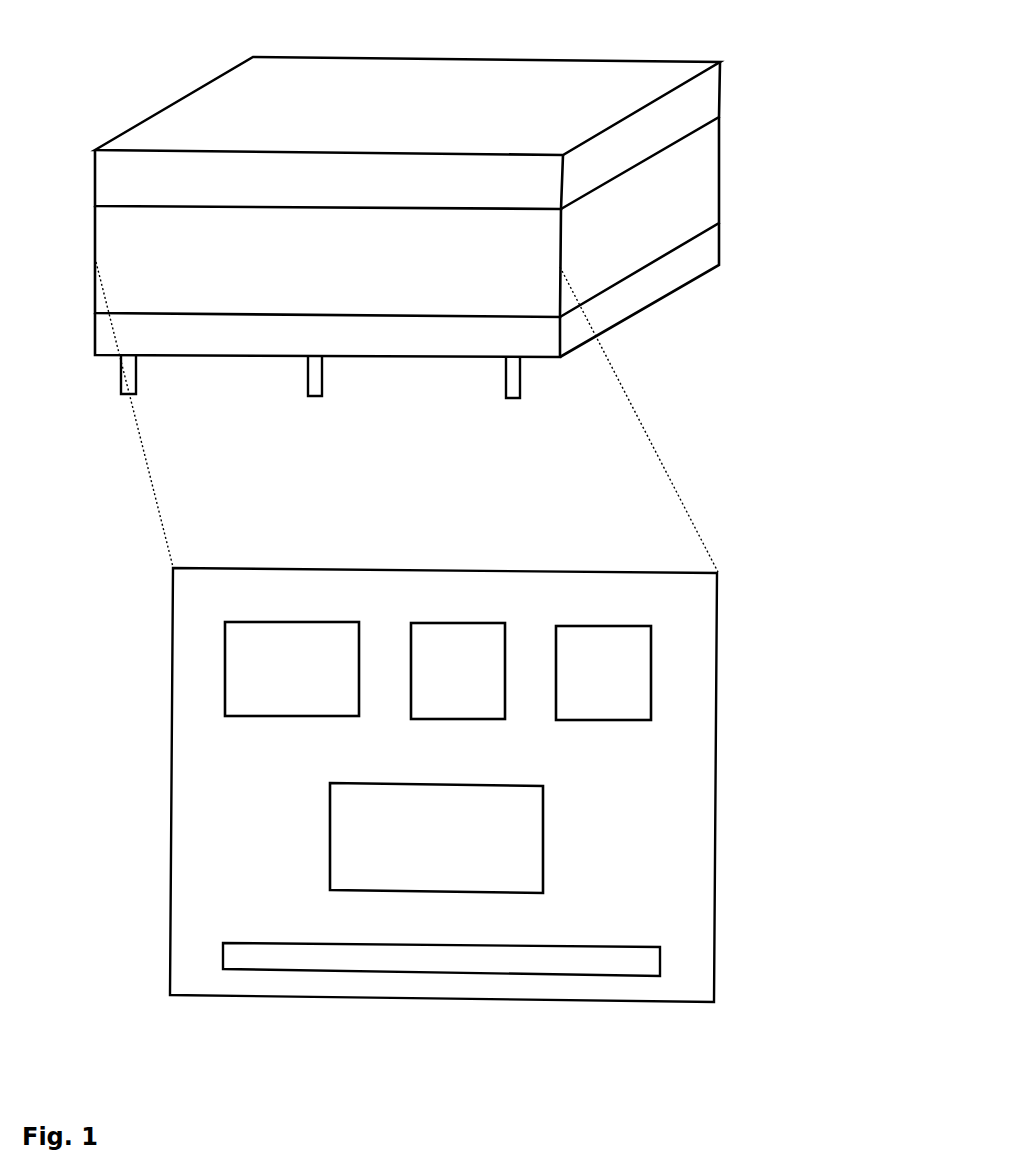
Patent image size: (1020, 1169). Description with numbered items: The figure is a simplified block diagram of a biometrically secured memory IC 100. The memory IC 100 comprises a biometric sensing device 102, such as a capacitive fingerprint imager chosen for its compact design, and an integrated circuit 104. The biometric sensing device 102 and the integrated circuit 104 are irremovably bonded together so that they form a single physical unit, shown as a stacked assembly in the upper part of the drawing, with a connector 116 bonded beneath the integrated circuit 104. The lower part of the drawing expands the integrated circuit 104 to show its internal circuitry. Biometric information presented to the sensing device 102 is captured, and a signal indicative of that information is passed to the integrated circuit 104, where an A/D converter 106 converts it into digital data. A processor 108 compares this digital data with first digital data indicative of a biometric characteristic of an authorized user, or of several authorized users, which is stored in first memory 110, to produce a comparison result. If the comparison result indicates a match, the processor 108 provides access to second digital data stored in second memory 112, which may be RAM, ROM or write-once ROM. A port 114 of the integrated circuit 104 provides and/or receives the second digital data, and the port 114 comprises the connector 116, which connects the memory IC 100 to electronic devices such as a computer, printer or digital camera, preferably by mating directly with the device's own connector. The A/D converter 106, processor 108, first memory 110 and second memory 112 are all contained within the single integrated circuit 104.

The biometrically secured memory IC 100 is at (908, 10).
The biometric sensing device 102 is at (640, 128).
The integrated circuit 104 is at (653, 210).
The connector 116 is at (613, 318).
The A/D converter 106 is at (253, 662).
The first memory 110 is at (463, 692).
The second memory 112 is at (623, 666).
The processor 108 is at (462, 837).
The port 114 is at (500, 959).